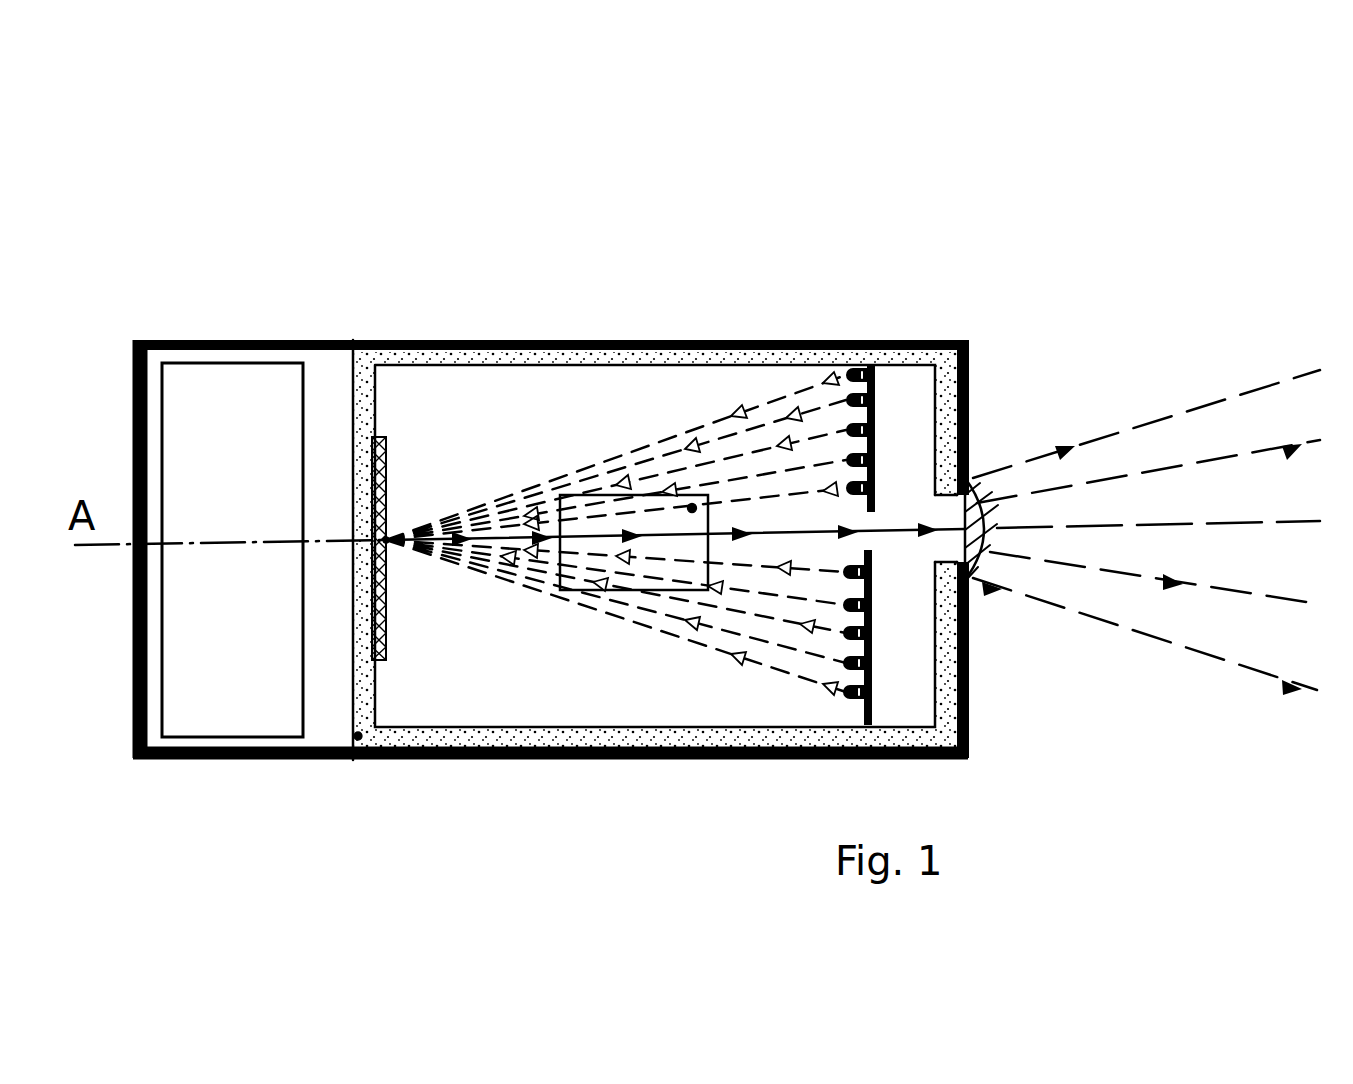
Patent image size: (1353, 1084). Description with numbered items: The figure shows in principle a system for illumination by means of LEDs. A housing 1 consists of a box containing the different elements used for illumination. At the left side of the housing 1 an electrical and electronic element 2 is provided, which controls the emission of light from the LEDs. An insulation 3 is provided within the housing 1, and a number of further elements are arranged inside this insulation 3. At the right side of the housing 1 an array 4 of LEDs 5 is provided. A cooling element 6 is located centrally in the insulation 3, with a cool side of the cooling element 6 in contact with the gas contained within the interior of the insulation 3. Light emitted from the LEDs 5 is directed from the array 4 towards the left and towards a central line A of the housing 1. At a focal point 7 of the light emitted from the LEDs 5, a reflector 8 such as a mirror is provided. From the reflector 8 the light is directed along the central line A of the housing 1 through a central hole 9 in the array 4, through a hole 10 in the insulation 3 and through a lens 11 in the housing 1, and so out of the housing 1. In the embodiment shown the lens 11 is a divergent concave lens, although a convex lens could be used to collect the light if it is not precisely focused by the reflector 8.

The housing 1 is at (607, 345).
The electrical and electronic element 2 is at (268, 388).
The insulation 3 is at (355, 758).
The array 4 is at (878, 363).
The LEDs 5 is at (850, 375).
The cooling element 6 is at (692, 508).
The focal point 7 is at (390, 534).
The reflector 8 is at (380, 437).
The central hole 9 is at (875, 540).
The hole 10 is at (967, 580).
The lens 11 is at (973, 480).